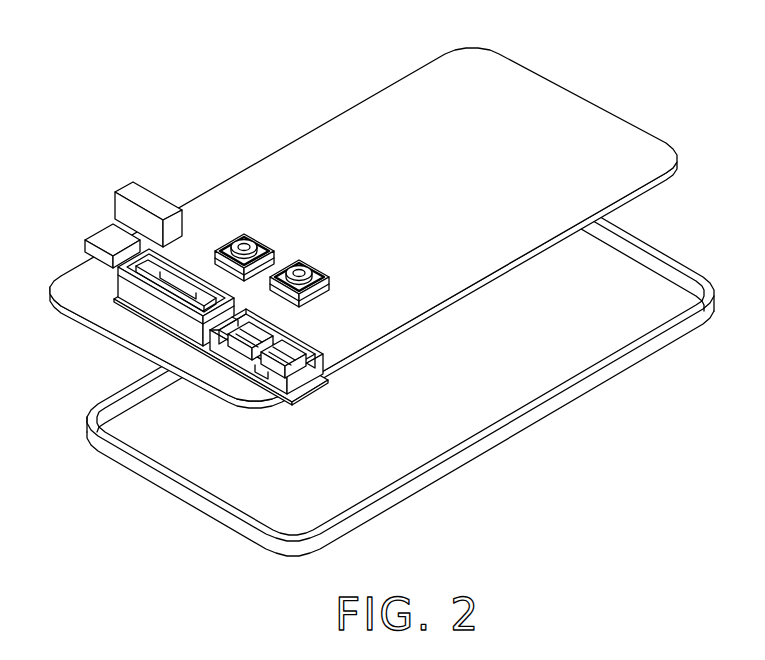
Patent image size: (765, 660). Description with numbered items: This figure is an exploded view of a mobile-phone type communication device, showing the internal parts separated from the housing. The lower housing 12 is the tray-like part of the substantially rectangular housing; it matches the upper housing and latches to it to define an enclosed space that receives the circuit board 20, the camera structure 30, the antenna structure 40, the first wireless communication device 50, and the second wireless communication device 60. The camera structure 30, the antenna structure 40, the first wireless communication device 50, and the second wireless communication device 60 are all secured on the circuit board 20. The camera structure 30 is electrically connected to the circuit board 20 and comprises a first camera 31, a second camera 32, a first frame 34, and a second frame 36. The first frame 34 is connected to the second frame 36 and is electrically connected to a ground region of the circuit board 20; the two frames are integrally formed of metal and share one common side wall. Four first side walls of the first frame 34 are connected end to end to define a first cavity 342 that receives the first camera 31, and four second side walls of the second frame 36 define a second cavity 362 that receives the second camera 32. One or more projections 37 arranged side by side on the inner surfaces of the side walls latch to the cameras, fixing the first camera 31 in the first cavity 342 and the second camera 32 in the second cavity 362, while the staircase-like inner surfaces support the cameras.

The lower housing 12 is at (517, 428).
The circuit board 20 is at (562, 120).
The camera structure 30 is at (257, 186).
The first camera 31 is at (306, 256).
The second camera 32 is at (250, 228).
The first frame 34 is at (354, 424).
The first cavity 342 is at (300, 360).
The second frame 36 is at (220, 262).
The second cavity 362 is at (280, 352).
The projection 37 is at (288, 324).
The antenna structure 40 is at (123, 292).
The first wireless communication device 50 is at (128, 192).
The second wireless communication device 60 is at (103, 237).